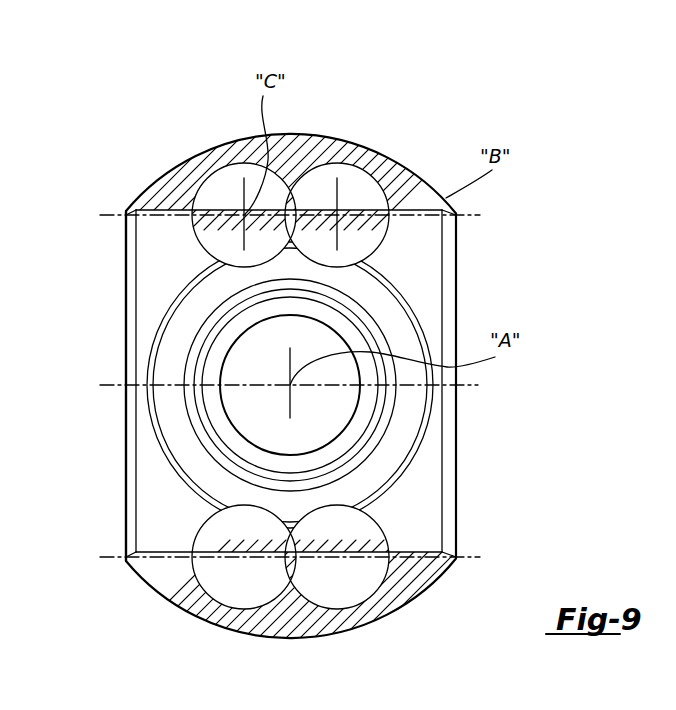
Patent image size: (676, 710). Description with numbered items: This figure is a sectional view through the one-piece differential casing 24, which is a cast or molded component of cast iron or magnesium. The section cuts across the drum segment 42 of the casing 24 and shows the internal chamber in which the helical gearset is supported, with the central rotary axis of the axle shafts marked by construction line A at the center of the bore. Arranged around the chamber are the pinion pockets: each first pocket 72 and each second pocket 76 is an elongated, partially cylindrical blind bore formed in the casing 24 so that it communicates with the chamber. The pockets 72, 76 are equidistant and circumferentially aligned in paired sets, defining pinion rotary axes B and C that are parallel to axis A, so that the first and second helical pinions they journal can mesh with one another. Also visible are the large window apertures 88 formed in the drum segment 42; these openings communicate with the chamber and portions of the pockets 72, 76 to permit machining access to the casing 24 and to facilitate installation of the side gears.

The casing 24 is at (481, 114).
The drum segment 42 is at (408, 583).
The first pockets 72 is at (368, 180).
The second pockets 76 is at (220, 172).
The window apertures 88 is at (131, 283).